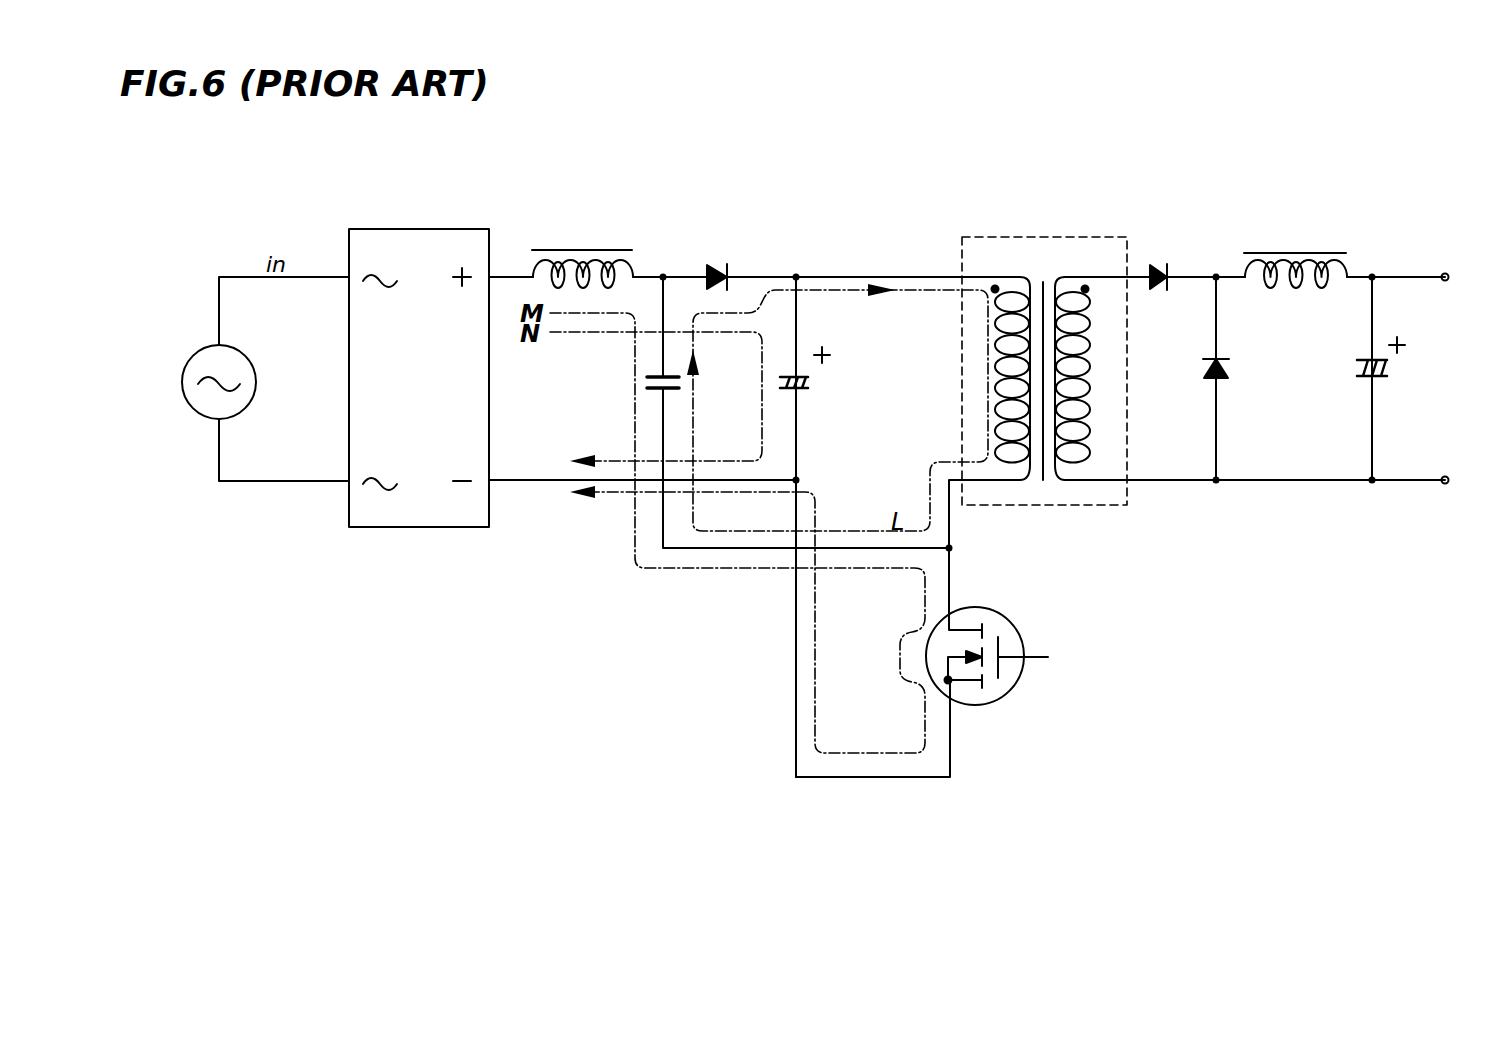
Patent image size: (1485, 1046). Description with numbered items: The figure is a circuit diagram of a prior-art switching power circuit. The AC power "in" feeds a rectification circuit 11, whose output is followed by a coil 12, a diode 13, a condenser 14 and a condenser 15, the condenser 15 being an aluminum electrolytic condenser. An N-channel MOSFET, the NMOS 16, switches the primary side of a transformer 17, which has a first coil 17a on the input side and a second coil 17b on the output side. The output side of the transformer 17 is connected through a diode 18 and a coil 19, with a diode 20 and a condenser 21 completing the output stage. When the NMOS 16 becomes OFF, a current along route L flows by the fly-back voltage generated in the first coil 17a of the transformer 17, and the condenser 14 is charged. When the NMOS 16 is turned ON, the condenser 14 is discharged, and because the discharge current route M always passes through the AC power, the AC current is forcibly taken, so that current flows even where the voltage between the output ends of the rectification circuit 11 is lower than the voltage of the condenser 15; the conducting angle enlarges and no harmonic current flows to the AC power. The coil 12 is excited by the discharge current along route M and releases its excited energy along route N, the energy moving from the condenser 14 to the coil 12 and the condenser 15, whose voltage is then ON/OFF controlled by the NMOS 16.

The rectification circuit 11 is at (405, 229).
The coil 12 is at (565, 250).
The diode 13 is at (718, 262).
The condenser 14 is at (640, 383).
The condenser 15 is at (808, 382).
The N-channel MOSFET (NMOS) 16 is at (1008, 690).
The transformer 17 is at (1089, 376).
The first coil 17a is at (1010, 466).
The secondary winding 17b is at (1078, 466).
The diode 18 is at (1155, 262).
The coil 19 is at (1280, 253).
The diode 20 is at (1230, 370).
The condenser 21 is at (1390, 368).